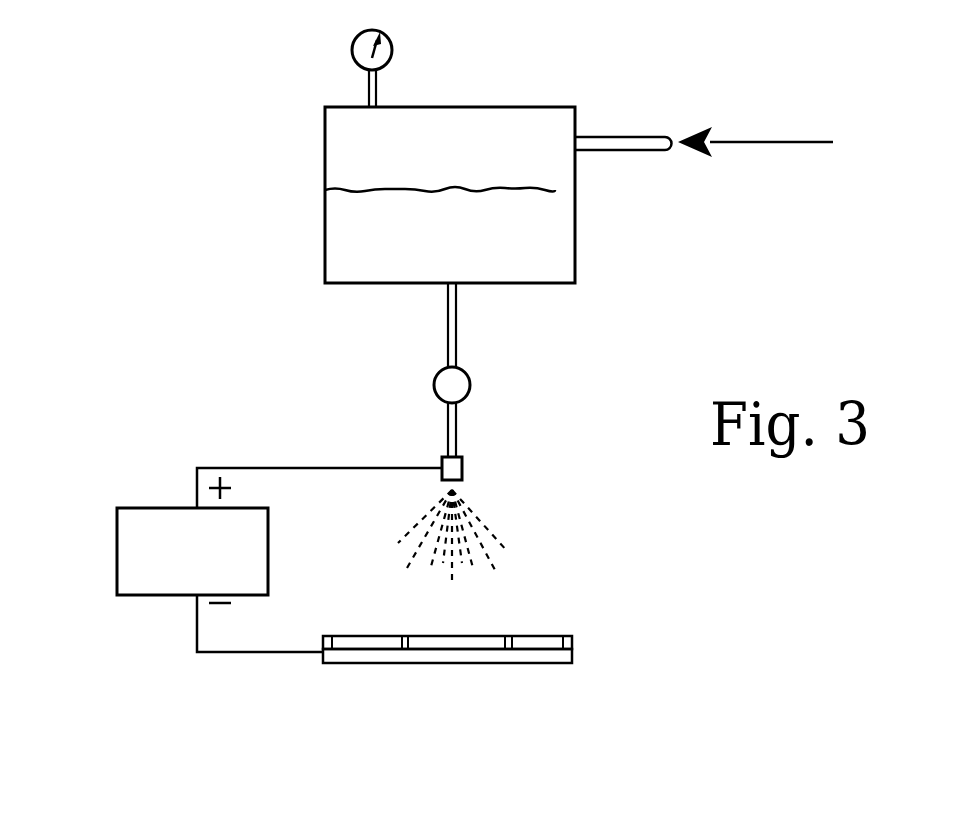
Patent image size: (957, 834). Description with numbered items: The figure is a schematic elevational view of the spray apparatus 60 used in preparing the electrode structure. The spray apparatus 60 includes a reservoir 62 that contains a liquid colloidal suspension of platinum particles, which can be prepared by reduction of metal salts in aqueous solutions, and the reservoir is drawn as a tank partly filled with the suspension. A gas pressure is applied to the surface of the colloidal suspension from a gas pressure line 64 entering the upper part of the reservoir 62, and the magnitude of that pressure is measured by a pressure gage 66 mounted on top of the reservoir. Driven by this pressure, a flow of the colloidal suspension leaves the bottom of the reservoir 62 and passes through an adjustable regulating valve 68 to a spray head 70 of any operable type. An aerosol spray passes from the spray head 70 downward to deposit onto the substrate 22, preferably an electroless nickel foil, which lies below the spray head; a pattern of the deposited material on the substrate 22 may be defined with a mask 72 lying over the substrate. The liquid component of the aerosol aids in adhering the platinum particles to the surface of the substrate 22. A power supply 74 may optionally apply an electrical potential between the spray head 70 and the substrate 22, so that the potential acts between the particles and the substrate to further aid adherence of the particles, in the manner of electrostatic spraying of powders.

The spray apparatus 60 is at (192, 102).
The reservoir 62 is at (325, 122).
The gas pressure line 64 is at (638, 152).
The pressure gage 66 is at (352, 50).
The adjustable regulating valve 68 is at (470, 379).
The spray head 70 is at (462, 463).
The mask 72 is at (573, 640).
The substrate 22 is at (558, 665).
The power supply 74 is at (117, 527).